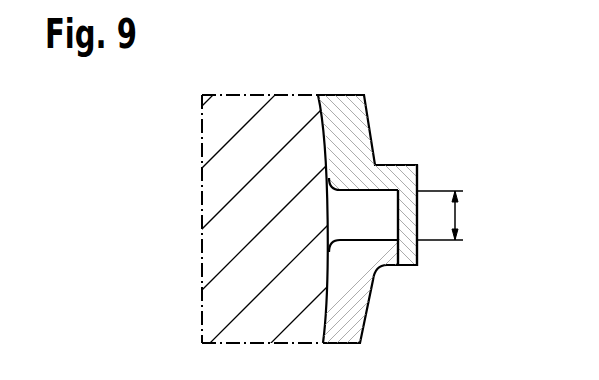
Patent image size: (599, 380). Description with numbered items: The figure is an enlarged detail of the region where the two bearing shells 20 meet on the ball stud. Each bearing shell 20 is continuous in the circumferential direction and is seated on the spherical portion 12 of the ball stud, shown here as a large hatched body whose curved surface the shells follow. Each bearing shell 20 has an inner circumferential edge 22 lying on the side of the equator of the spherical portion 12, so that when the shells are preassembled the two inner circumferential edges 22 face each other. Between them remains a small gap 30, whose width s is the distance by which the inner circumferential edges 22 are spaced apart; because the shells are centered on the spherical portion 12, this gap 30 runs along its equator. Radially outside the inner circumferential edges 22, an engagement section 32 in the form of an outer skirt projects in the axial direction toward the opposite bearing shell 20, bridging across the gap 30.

The spherical portion 12 is at (222, 310).
The bearing shell 20 is at (347, 108).
The inner circumferential edge 22 is at (357, 190).
The gap 30 is at (373, 214).
The engagement section 32 is at (403, 249).
The groove width s is at (455, 213).